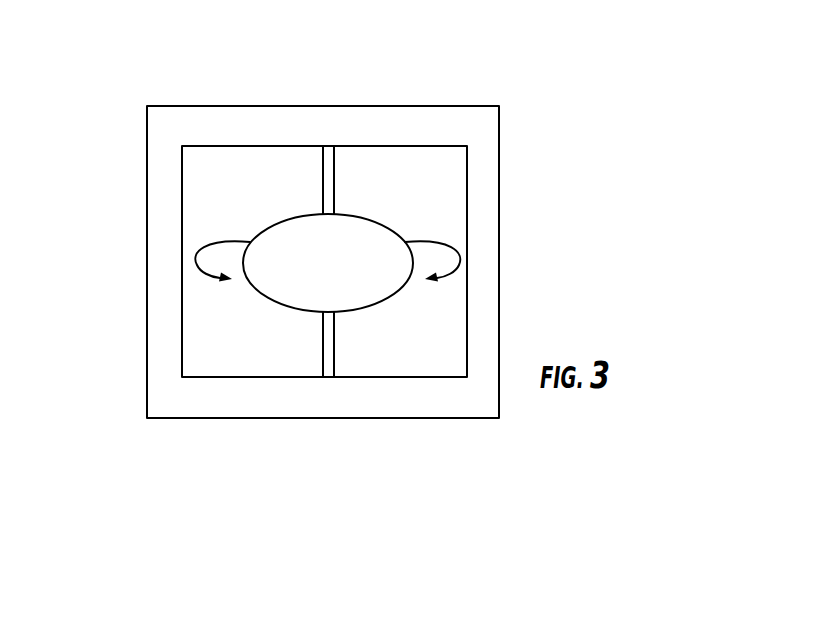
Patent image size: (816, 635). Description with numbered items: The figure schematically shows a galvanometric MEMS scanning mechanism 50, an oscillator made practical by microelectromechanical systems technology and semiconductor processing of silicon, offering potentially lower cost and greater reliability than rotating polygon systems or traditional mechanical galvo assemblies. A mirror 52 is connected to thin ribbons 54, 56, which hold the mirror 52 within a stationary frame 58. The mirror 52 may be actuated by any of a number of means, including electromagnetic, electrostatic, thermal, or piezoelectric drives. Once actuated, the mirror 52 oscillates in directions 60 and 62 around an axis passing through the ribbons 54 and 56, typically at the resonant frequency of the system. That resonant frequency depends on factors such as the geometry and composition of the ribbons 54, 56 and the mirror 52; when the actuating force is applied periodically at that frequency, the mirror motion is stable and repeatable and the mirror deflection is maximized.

The galvanometric MEMS scanning mechanism 50 is at (584, 76).
The mirror 52 is at (385, 298).
The thin ribbon 54 is at (323, 175).
The thin ribbon 56 is at (322, 355).
The stationary frame 58 is at (499, 178).
The direction 60 is at (457, 268).
The direction 62 is at (208, 247).